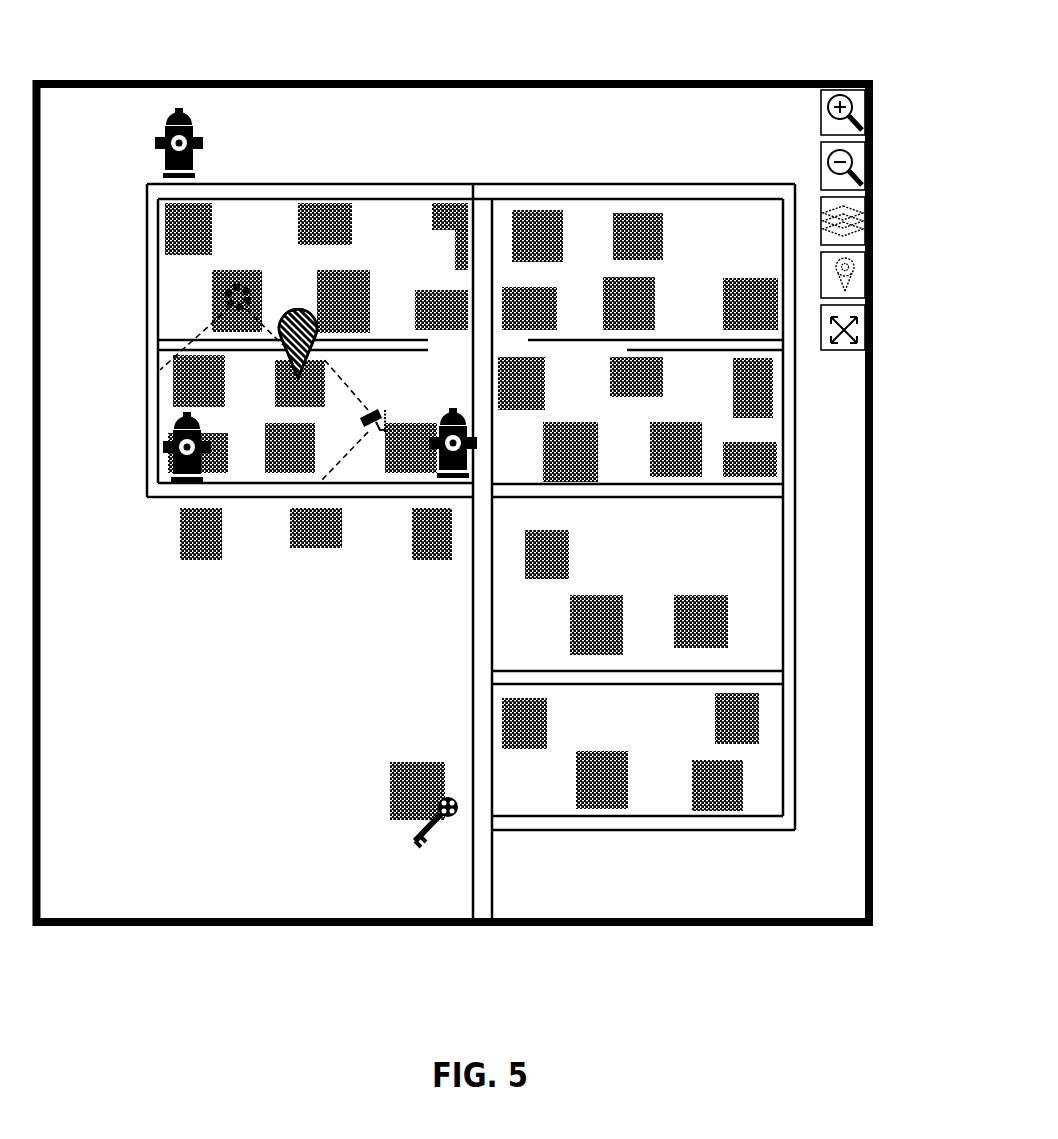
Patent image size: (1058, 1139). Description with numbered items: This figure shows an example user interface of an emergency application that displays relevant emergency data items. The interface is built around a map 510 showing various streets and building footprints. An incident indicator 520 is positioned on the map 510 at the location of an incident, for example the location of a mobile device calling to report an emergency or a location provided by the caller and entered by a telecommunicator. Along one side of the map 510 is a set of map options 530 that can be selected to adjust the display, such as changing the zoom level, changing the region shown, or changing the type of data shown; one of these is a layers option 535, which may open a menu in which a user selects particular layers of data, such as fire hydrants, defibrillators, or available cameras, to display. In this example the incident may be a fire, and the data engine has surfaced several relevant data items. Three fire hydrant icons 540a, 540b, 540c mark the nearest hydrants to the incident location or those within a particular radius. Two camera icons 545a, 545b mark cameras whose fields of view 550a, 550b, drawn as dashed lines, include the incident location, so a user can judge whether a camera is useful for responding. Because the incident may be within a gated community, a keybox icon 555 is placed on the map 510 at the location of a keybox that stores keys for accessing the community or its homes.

The map 510 is at (337, 102).
The incident indicator 520 is at (308, 305).
The map options 530 is at (846, 72).
The layers option 535 is at (868, 218).
The fire hydrant icon 540a is at (465, 418).
The fire hydrant icon 540b is at (210, 137).
The fire hydrant icon 540c is at (162, 445).
The camera icon 545a is at (230, 280).
The camera icon 545b is at (385, 408).
The field of view 550a is at (215, 333).
The field of view 550b is at (330, 467).
The keybox icon 555 is at (422, 822).